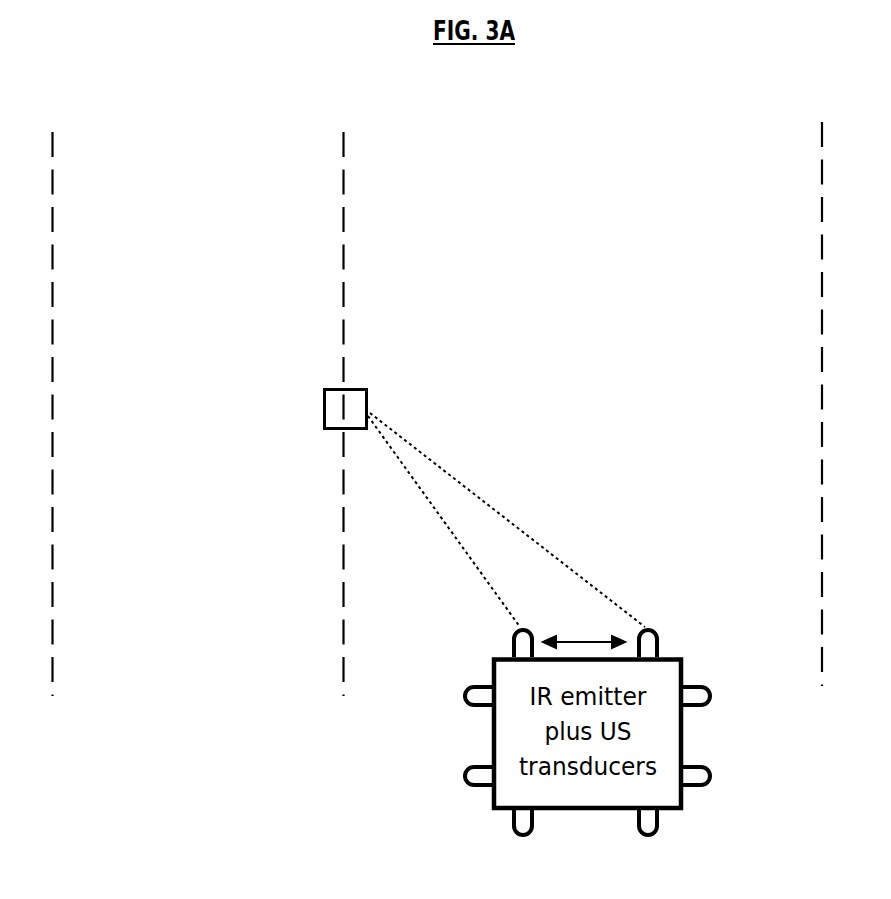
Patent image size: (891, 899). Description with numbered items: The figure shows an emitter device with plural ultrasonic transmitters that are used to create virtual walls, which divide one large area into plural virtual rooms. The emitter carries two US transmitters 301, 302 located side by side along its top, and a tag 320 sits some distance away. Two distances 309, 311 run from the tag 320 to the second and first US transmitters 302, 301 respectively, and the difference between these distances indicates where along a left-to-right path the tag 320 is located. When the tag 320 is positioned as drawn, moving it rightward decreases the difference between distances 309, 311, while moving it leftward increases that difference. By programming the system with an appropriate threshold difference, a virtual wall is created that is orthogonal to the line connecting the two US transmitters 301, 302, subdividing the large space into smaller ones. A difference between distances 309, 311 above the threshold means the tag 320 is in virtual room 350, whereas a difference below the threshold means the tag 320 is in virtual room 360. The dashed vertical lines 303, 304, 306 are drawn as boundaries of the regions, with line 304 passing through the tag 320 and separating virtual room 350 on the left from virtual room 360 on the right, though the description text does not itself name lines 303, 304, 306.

The US transmitter 301 is at (512, 641).
The US transmitter 302 is at (660, 641).
The first reference plane 303 is at (53, 397).
The second reference plane 304 is at (345, 397).
The third reference plane 306 is at (822, 391).
The distance 309 is at (493, 511).
The distance 311 is at (453, 533).
The tag 320 is at (357, 387).
The virtual room 350 is at (158, 262).
The virtual room 360 is at (571, 262).